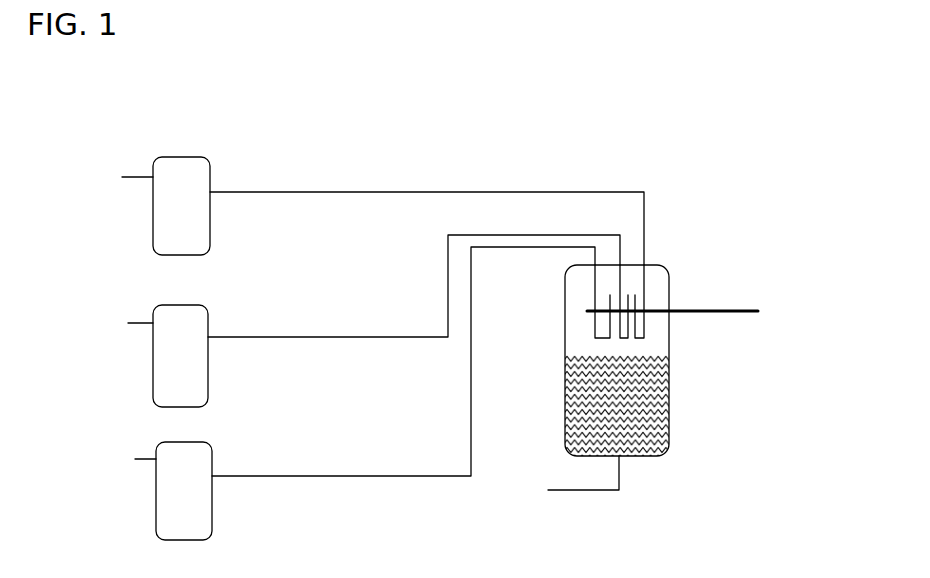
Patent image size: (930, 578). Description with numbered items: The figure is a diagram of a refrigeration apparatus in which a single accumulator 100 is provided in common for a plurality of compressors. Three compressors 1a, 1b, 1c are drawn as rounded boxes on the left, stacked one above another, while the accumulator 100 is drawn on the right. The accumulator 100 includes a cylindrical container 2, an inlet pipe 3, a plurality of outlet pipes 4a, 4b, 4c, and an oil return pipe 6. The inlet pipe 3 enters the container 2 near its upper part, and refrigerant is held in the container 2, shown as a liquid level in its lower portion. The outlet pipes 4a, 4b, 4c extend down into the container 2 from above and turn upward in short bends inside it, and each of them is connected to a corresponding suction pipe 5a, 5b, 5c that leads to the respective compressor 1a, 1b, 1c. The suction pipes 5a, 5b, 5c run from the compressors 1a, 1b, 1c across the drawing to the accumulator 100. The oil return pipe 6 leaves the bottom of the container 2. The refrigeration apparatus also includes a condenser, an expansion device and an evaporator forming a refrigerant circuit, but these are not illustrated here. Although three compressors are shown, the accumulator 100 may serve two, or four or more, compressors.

The accumulator 100 is at (643, 319).
The compressor 1a is at (190, 157).
The compressor 1b is at (190, 305).
The compressor 1c is at (190, 442).
The cylindrical container 2 is at (669, 340).
The inlet pipe 3 is at (738, 310).
The outlet pipe 4a is at (645, 298).
The outlet pipe 4b is at (621, 280).
The outlet pipe 4c is at (595, 287).
The suction pipe 5a is at (350, 192).
The suction pipe 5b is at (348, 337).
The suction pipe 5c is at (347, 476).
The oil return pipe 6 is at (621, 478).